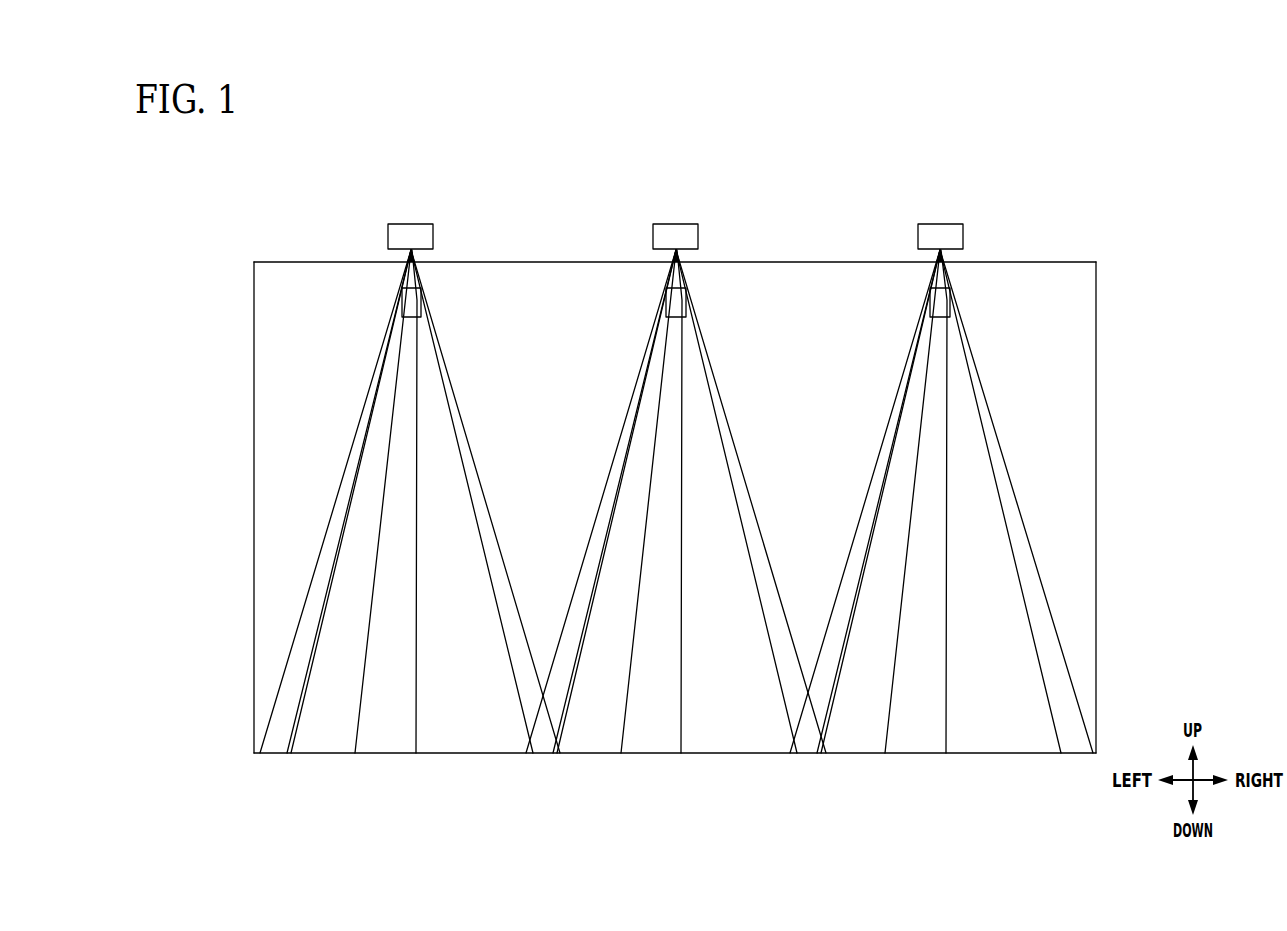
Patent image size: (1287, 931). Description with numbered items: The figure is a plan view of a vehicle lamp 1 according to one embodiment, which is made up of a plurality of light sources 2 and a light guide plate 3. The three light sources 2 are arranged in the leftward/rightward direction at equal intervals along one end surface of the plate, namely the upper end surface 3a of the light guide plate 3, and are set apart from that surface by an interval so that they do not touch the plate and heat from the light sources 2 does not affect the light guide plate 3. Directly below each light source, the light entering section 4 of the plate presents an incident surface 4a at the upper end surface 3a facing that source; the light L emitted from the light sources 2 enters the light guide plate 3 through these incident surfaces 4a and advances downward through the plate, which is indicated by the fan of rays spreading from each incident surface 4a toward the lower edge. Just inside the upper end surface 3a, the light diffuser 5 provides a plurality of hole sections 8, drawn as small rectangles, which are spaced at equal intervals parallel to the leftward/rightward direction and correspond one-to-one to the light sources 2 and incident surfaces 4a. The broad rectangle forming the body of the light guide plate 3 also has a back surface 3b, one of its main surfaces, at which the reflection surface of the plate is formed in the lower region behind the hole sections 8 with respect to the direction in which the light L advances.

The vehicle lamp 1 is at (1034, 211).
The light source 2 is at (412, 222).
The light guide plate 3 is at (240, 445).
The upper end surface 3a is at (297, 260).
The back surface 3b is at (286, 356).
The light entering section 4 is at (675, 235).
The incident surface 4a is at (414, 257).
The light diffuser 5 is at (445, 291).
The hole section 8 is at (402, 303).
The light L is at (323, 547).